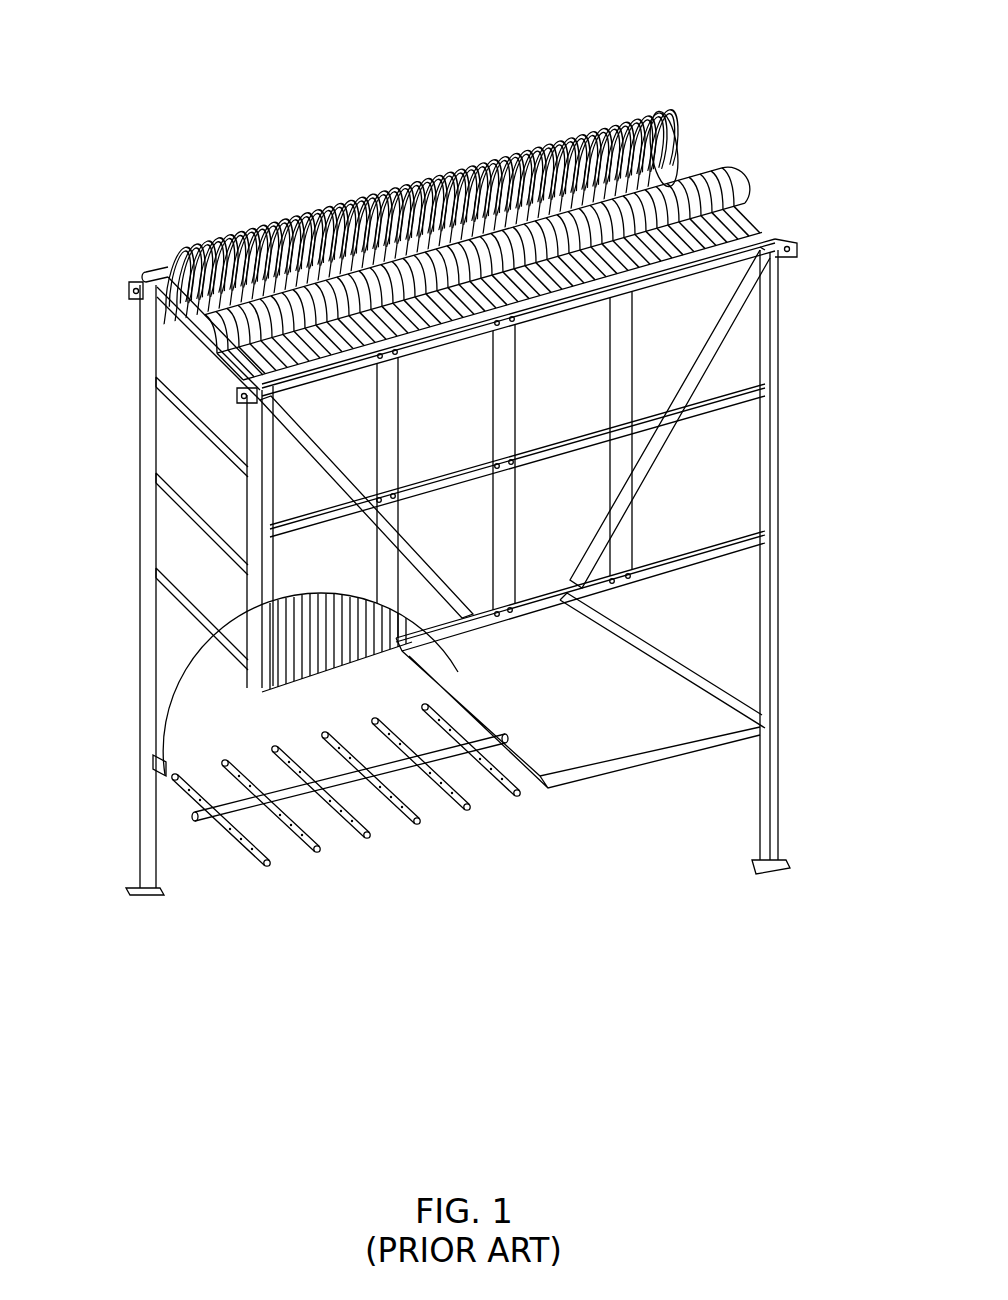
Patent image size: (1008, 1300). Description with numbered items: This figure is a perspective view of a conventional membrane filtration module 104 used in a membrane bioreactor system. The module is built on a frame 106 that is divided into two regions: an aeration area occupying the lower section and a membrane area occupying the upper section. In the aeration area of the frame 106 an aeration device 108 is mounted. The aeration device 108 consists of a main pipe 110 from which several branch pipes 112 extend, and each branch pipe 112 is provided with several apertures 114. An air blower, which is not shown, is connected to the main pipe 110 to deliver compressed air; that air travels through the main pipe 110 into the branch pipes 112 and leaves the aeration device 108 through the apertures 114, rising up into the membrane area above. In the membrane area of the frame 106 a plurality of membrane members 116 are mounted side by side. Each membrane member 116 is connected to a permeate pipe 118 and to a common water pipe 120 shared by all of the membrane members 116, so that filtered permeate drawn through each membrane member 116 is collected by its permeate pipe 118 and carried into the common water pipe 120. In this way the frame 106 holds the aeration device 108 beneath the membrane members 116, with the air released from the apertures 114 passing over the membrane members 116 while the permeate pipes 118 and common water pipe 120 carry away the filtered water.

The membrane filtration module 104 is at (757, 92).
The frame 106 is at (747, 467).
The aeration device 108 is at (410, 853).
The main pipe 110 is at (198, 802).
The branch pipe 112 is at (258, 862).
The aperture 114 is at (238, 838).
The membrane member 116 is at (295, 360).
The permeate pipe 118 is at (180, 262).
The common water pipe 120 is at (148, 270).